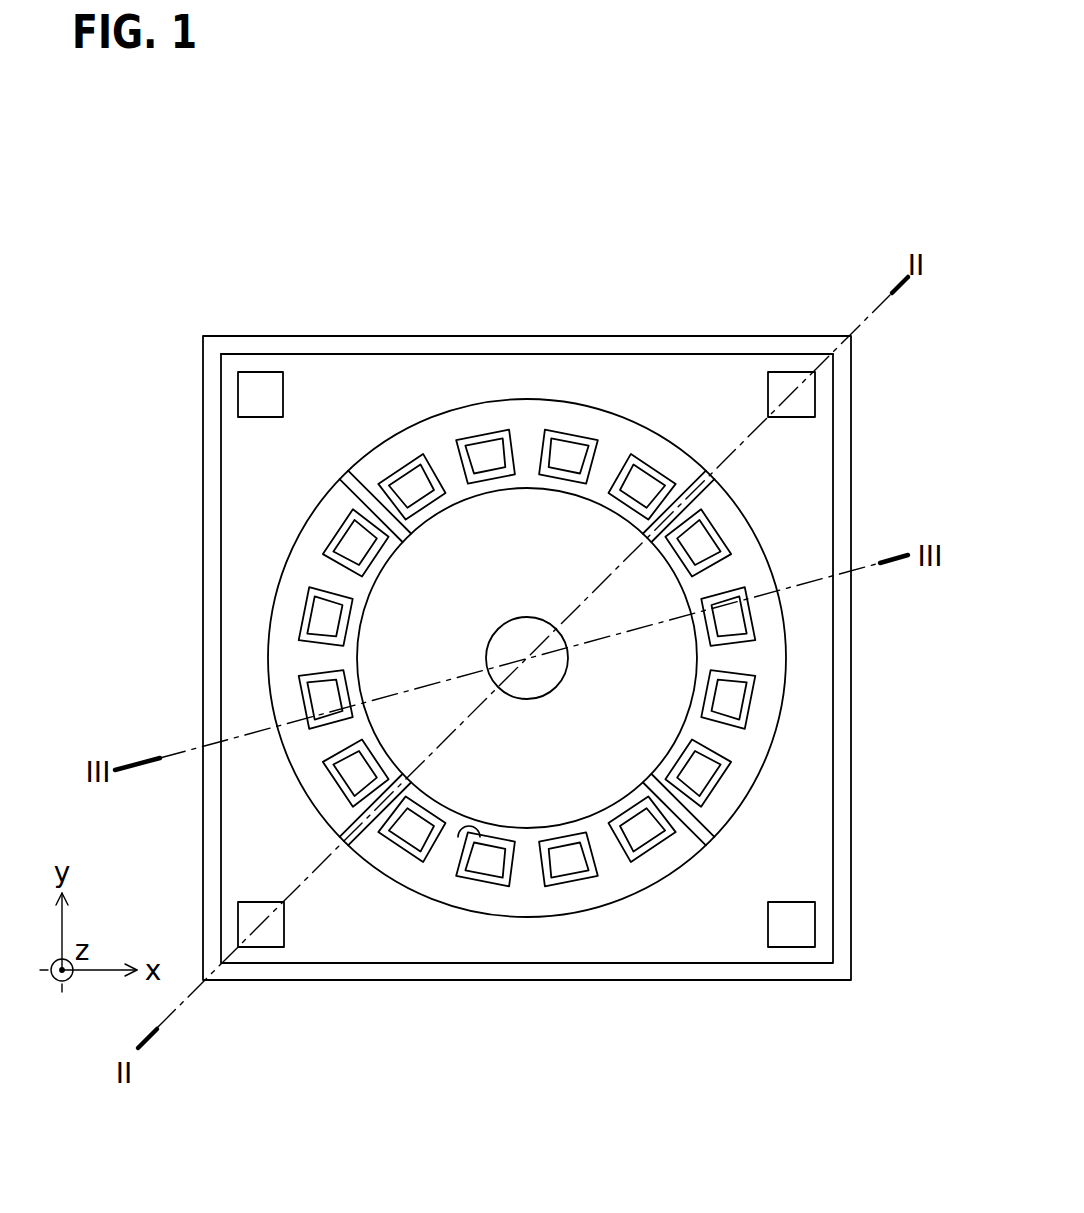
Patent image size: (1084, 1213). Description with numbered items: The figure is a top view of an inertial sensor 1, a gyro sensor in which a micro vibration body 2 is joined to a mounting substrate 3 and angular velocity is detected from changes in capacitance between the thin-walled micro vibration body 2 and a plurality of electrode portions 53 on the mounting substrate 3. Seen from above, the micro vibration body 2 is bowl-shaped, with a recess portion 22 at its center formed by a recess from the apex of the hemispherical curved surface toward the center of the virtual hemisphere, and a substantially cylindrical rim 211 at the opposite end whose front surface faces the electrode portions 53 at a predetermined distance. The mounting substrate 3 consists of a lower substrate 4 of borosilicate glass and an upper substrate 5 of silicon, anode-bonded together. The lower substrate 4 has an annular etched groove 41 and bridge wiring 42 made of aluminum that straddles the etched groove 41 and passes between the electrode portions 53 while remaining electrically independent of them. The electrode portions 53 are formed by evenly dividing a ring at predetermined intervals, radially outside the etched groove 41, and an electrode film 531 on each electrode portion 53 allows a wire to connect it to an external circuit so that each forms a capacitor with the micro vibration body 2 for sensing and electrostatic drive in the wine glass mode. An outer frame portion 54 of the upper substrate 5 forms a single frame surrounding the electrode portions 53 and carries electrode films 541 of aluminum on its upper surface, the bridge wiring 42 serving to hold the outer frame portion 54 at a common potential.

The inertial sensor 1 is at (160, 393).
The micro vibration body 2 is at (357, 657).
The rim 211 is at (700, 658).
The recess portion 22 is at (523, 628).
The mounting substrate 3 is at (937, 413).
The lower substrate 4 is at (855, 426).
The etched groove 41 is at (474, 834).
The bridge wiring 42 is at (352, 494).
The upper substrate 5 is at (840, 473).
The electrode portions 53 is at (570, 434).
The electrode film 531 is at (572, 462).
The outer frame portion 54 is at (379, 353).
The electrode films 541 is at (262, 372).